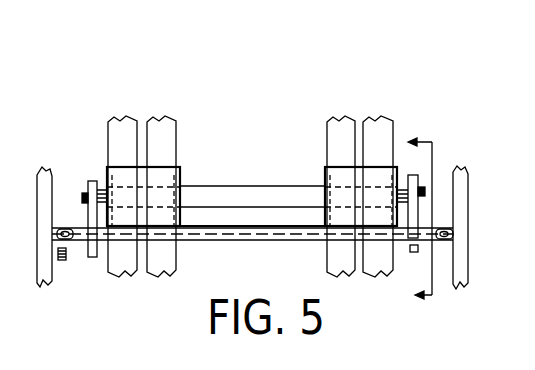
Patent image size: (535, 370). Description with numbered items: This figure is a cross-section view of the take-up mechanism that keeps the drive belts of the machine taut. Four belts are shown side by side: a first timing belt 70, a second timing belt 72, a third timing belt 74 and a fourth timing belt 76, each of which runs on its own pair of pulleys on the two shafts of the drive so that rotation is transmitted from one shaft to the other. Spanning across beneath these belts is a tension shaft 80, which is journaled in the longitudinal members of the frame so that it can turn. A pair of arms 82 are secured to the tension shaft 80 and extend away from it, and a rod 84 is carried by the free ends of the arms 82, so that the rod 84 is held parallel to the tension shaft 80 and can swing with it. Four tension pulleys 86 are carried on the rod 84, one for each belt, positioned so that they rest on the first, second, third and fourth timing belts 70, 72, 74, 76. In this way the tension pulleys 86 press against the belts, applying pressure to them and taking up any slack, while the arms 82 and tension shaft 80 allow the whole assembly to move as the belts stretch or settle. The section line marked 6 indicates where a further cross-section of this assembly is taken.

The first timing belt 70 is at (162, 137).
The second timing belt 72 is at (382, 130).
The third timing belt 74 is at (122, 140).
The fourth timing belt 76 is at (342, 135).
The tension shaft 80 is at (296, 241).
The arms 82 is at (63, 182).
The rod 84 is at (287, 152).
The tension pulleys 86 is at (97, 218).
The section line 6- 6 is at (435, 220).